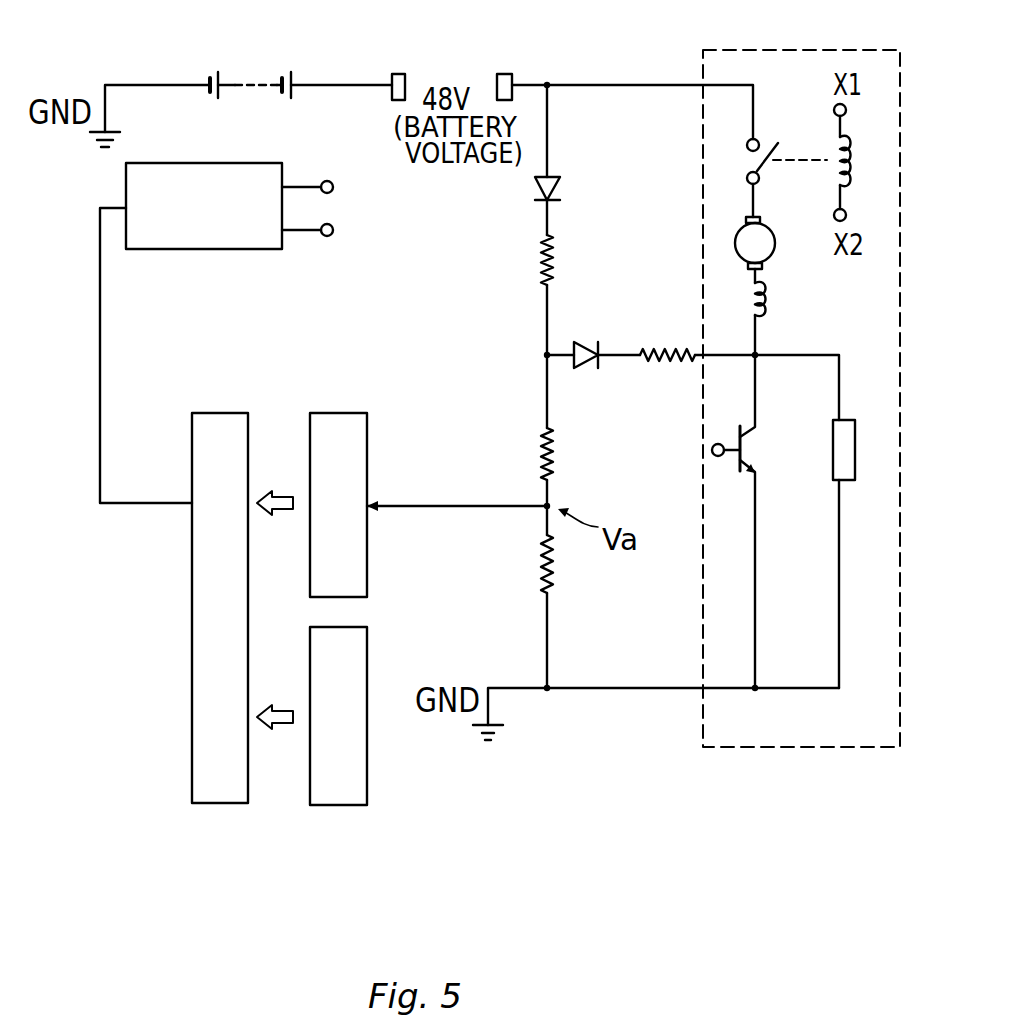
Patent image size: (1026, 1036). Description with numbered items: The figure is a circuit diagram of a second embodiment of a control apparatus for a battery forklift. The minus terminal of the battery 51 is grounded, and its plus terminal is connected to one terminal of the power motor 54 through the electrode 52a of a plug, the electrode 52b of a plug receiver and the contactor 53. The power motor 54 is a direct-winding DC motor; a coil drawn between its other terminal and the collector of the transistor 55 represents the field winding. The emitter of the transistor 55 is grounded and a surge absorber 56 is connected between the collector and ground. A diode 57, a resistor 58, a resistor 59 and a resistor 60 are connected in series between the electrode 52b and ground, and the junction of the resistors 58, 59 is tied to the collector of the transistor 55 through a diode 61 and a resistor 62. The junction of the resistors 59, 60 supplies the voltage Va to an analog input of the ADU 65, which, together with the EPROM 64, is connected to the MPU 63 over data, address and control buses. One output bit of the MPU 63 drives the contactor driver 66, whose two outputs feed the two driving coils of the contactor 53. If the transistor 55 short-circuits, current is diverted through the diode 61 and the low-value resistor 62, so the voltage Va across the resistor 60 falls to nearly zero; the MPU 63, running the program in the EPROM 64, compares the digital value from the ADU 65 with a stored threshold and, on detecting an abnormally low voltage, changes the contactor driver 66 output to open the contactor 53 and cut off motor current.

The battery 51 is at (236, 75).
The electrode of a plug 52a is at (396, 74).
The electrode of a plug receiver 52b is at (504, 74).
The contactor 53 is at (758, 163).
The power motor 54 is at (760, 243).
The transistor 55 is at (751, 428).
The surge absorber 56 is at (833, 456).
The diode 57 is at (535, 188).
The resistor 58 is at (543, 272).
The resistor 59 is at (543, 457).
The resistor 60 is at (543, 572).
The diode 61 is at (589, 342).
The resistor 62 is at (668, 348).
The MPU 63 is at (218, 413).
The EPROM 64 is at (367, 790).
The ADU 65 is at (338, 413).
The contactor driver 66 is at (222, 163).